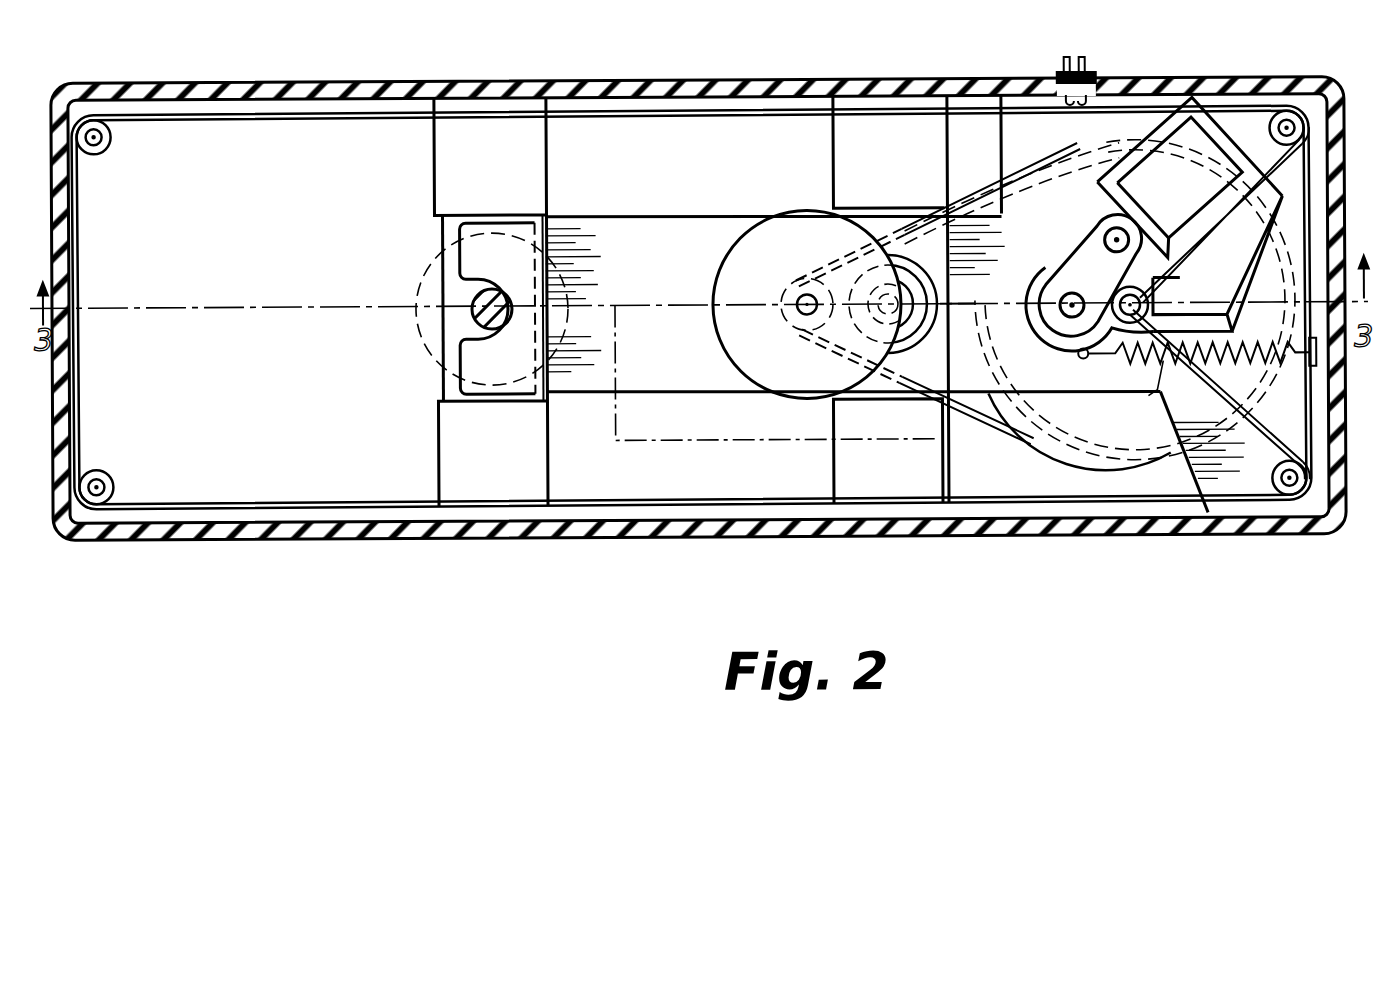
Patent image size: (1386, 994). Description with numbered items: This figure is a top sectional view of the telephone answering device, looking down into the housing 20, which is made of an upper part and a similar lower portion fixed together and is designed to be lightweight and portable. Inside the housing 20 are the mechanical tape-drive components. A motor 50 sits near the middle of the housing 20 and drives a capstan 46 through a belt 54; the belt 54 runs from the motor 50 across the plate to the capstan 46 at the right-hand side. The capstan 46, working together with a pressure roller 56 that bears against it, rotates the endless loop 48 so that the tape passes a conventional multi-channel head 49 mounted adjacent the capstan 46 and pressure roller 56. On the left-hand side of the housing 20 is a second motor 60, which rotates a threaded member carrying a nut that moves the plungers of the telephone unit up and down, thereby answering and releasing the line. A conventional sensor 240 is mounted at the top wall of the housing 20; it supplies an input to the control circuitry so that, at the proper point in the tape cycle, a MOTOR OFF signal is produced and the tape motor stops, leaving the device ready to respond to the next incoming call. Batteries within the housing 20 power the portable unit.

The housing 20 is at (652, 548).
The sensor 240 is at (1097, 80).
The endless loop 48 is at (655, 505).
The motor 60 is at (440, 286).
The motor 50 is at (838, 372).
The belt 54 is at (990, 424).
The multi-channel head 49 is at (1160, 149).
The pressure roller 56 is at (1065, 265).
The capstan 46 is at (1142, 309).